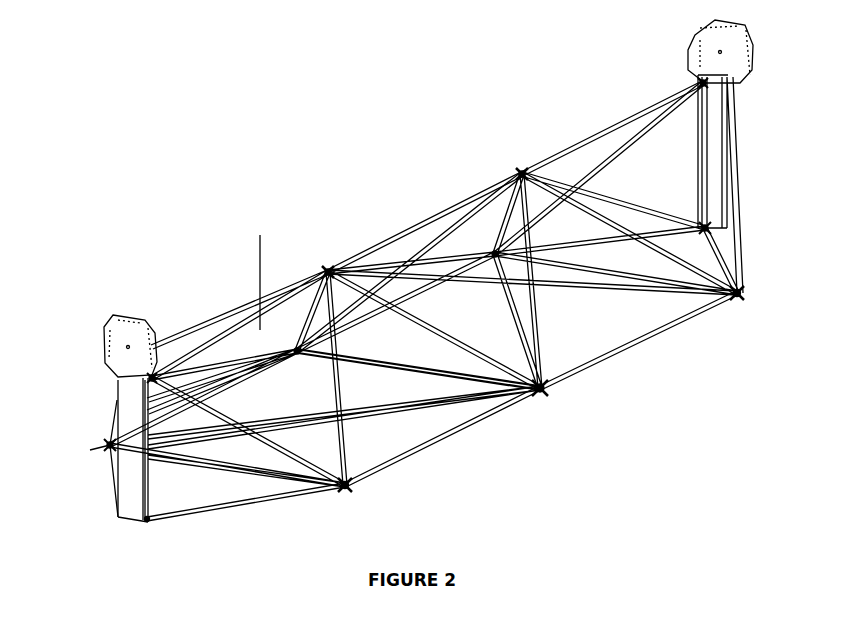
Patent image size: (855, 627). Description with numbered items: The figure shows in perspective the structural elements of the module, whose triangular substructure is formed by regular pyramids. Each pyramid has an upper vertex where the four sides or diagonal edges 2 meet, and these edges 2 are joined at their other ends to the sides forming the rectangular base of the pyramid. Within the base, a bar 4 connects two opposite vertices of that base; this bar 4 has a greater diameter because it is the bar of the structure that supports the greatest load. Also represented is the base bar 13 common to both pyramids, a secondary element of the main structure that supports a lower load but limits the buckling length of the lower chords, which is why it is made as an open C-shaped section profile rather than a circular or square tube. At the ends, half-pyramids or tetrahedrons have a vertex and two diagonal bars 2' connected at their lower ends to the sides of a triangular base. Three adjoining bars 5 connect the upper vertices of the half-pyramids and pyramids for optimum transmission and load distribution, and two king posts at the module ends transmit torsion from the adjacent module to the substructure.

The diagonal edges 2 is at (423, 284).
The diagonal bars 2' is at (416, 291).
The bar 4 is at (520, 400).
The adjoining bars 5 is at (230, 303).
The common base bar 13 is at (484, 380).